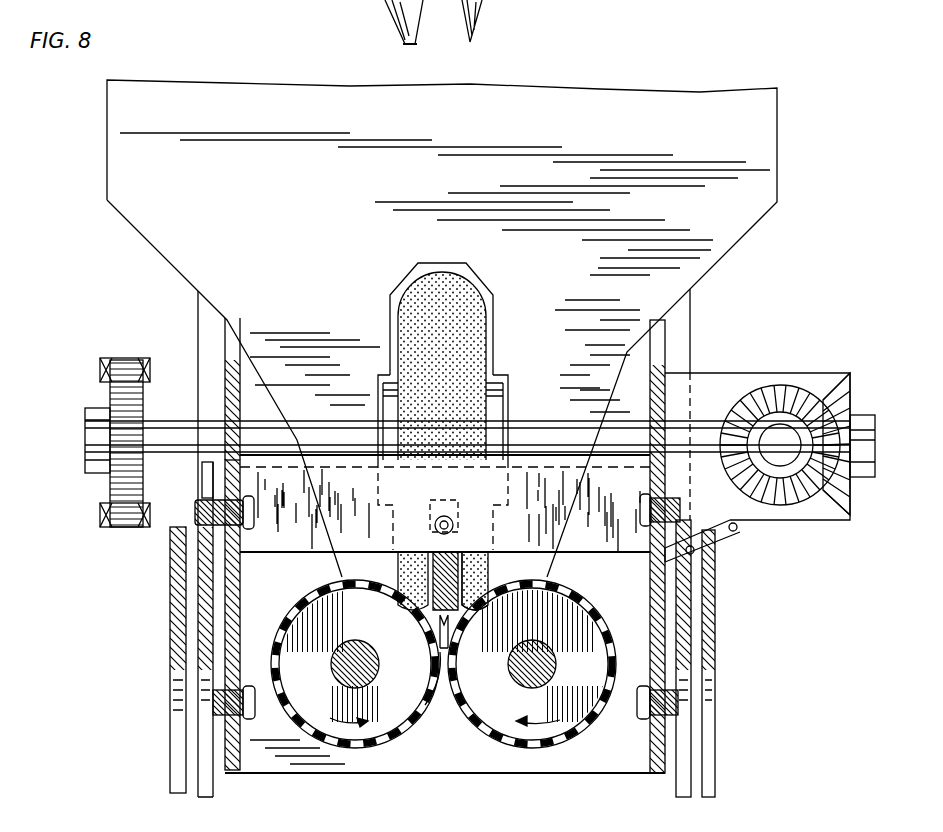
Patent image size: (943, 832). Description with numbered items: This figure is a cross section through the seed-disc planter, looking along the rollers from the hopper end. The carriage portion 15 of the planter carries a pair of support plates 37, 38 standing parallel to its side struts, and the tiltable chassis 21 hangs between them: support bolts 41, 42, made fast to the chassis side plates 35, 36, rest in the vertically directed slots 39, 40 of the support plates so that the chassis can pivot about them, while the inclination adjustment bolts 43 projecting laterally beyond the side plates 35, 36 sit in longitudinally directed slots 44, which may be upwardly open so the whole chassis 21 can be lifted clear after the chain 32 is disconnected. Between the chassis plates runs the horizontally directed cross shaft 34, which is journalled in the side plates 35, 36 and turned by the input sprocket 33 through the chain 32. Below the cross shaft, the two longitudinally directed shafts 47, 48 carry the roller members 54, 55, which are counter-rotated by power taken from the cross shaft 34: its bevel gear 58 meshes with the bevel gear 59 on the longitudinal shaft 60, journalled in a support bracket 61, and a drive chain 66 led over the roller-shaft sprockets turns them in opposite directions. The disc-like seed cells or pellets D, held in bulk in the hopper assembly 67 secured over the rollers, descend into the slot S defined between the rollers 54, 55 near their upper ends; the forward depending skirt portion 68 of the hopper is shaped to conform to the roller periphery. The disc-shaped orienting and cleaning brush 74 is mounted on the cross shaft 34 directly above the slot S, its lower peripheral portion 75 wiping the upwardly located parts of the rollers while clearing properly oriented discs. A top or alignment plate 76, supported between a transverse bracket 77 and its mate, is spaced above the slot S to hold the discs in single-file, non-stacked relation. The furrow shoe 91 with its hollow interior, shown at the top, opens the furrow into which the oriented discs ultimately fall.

The furrow shoe 91 is at (485, 17).
The hopper assembly 67 is at (133, 183).
The orienting and cleaning brush 74 is at (418, 299).
The chain 32 is at (107, 360).
The input sprocket 33 is at (112, 395).
The cross shaft 34 is at (551, 438).
The chassis 21 is at (226, 376).
The side plate 36 is at (240, 622).
The slot 40 is at (203, 490).
The support bolt 42 is at (255, 512).
The carriage portion 15 is at (170, 608).
The support plate 38 is at (205, 650).
The inclination adjustment bolt 43 is at (250, 688).
The roller member 55 is at (320, 727).
The shaft 48 is at (347, 684).
The roller member 54 is at (495, 735).
The shaft 47 is at (522, 690).
The alignment plate 76 is at (423, 569).
The lower peripheral portion 75 is at (458, 612).
The disc-like seed cells or pellets D is at (438, 640).
The slot S is at (422, 704).
The transverse bracket 77 is at (544, 536).
The support bolt 41 is at (442, 510).
The forward depending skirt portion 68 is at (612, 392).
The side plate 35 is at (648, 580).
The slot 39 is at (662, 489).
The support plate 37 is at (680, 645).
The slot 44 is at (700, 730).
The shaft 60 is at (741, 380).
The bevel gear 59 is at (793, 505).
The support bracket 61 is at (832, 375).
The bevel gear 58 is at (848, 485).
The drive chain 66 is at (732, 540).